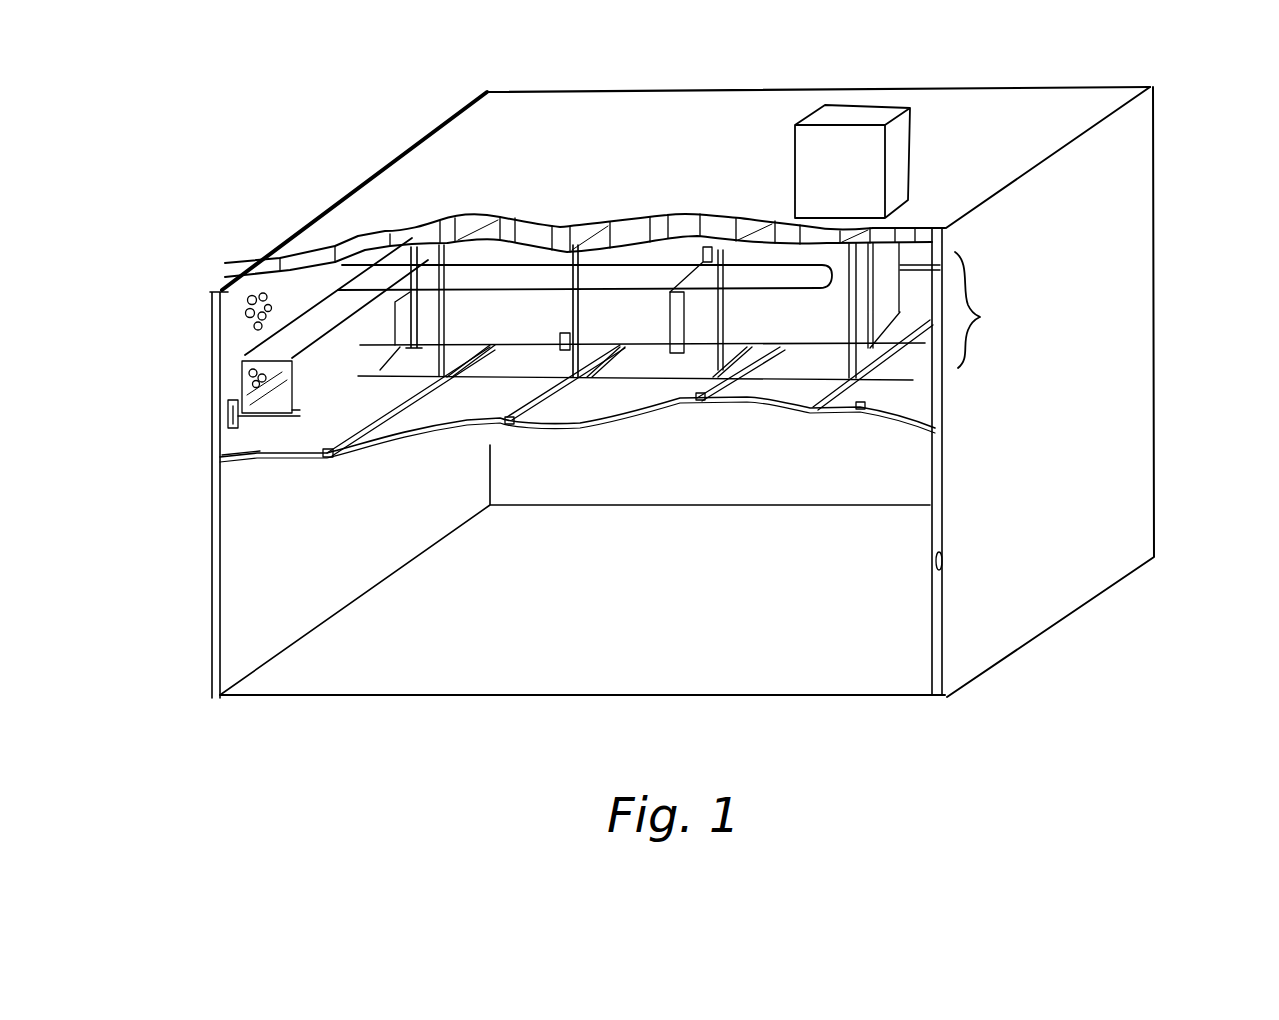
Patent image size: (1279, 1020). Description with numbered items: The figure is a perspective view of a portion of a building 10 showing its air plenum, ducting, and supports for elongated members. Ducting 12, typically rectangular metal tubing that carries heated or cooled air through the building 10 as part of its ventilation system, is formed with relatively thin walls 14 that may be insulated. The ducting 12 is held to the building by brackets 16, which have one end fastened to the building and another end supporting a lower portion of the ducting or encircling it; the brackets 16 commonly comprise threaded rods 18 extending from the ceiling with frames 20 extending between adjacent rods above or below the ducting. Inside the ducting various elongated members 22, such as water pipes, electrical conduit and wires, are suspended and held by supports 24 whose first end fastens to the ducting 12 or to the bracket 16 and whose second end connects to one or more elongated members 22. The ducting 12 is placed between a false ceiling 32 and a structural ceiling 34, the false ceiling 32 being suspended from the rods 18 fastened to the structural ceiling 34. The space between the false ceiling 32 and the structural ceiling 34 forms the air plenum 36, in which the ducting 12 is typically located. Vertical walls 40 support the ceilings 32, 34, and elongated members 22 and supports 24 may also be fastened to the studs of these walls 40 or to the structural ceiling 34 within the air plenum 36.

The building 10 is at (174, 680).
The ducting 12 is at (497, 315).
The walls 14 is at (298, 414).
The brackets 16 is at (220, 457).
The threaded rods 18 is at (398, 304).
The frames 20 is at (422, 385).
The elongated members 22 is at (270, 300).
The supports 24 is at (285, 297).
The false ceiling 32 is at (870, 407).
The structural ceiling 34 is at (947, 241).
The air plenum 36 is at (982, 318).
The walls 40 is at (942, 572).